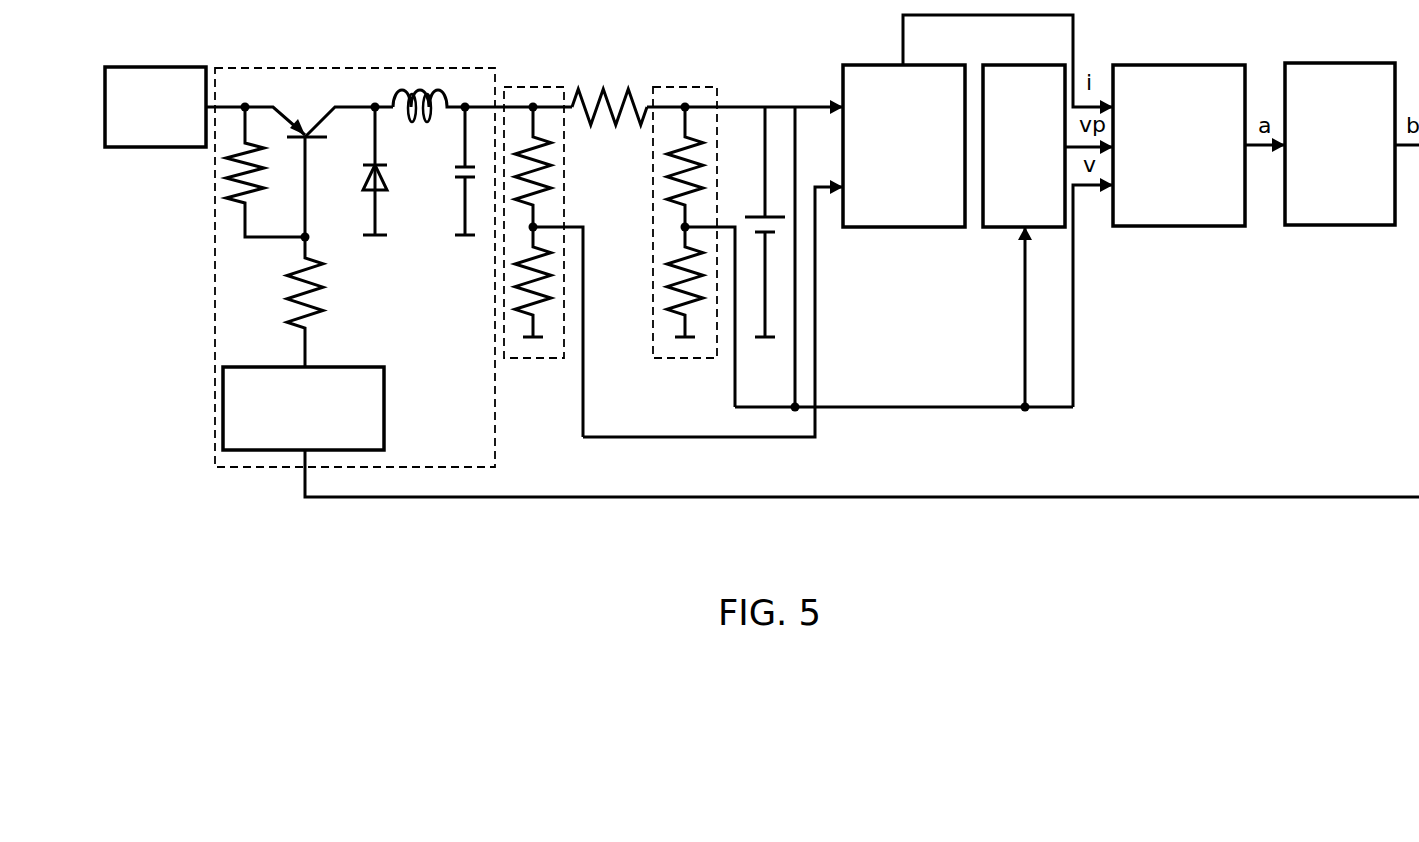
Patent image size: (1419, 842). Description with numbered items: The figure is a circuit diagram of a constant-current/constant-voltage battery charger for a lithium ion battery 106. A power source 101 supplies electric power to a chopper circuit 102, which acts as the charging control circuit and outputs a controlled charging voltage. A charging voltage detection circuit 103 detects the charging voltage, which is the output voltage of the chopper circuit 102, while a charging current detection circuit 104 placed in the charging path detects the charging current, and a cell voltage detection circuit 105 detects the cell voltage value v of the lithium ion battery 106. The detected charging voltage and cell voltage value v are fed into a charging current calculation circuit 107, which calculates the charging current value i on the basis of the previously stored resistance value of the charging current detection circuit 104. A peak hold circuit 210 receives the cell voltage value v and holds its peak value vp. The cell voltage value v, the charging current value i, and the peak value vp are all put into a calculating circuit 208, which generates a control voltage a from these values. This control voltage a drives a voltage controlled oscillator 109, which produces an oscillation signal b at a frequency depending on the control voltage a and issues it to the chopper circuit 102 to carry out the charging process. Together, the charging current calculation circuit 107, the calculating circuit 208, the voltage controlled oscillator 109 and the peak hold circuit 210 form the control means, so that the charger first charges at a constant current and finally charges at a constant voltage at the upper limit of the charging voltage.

The power source 101 is at (127, 65).
The chopper circuit 102 is at (330, 67).
The charging voltage detection circuit 103 is at (535, 84).
The charging current detection circuit 104 is at (617, 86).
The cell voltage detection circuit 105 is at (670, 86).
The lithium ion battery 106 is at (775, 205).
The charging current calculation circuit 107 is at (903, 229).
The peak hold circuit 210 is at (1011, 229).
The calculating circuit 208 is at (1157, 63).
The voltage controlled oscillator 109 is at (1318, 63).